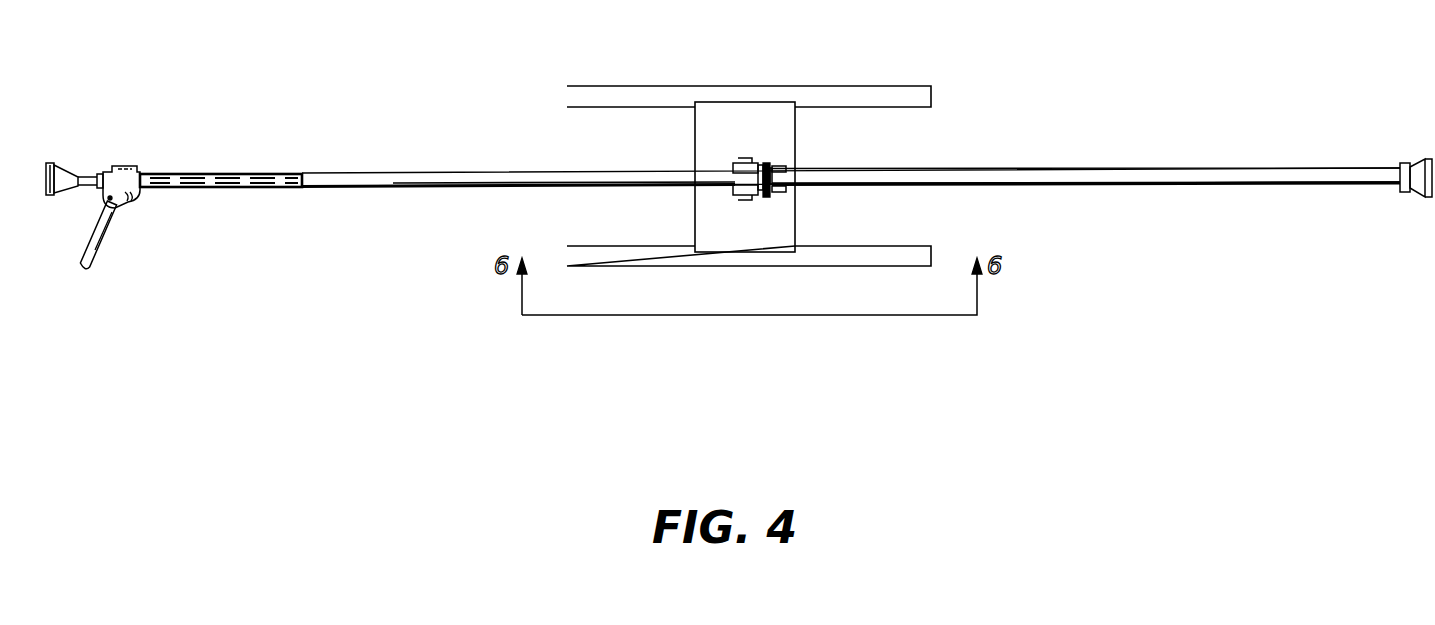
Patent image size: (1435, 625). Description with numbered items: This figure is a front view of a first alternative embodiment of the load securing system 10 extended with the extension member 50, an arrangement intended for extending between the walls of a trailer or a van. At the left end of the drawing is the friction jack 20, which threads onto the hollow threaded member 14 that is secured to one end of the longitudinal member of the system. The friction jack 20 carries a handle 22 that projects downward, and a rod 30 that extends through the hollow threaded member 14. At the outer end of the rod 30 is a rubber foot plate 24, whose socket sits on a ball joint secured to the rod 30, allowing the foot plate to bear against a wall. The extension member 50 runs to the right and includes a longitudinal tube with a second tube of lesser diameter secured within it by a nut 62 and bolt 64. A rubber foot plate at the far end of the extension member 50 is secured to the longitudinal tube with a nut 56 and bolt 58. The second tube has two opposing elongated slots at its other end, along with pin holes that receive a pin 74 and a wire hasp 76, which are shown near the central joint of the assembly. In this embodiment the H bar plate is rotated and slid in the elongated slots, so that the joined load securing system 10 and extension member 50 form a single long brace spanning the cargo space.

The load securing system 10 is at (264, 173).
The hollow threaded member 14 is at (188, 190).
The friction jack 20 is at (127, 166).
The handle 22 is at (102, 237).
The rubber foot plate 24 is at (53, 197).
The rod 30 is at (78, 173).
The extension member 50 is at (1040, 170).
The nut 56 is at (722, 197).
The bolt 58 is at (720, 168).
The nut 62 is at (785, 167).
The bolt 64 is at (786, 192).
The pin 74 is at (762, 166).
The wire hasp 76 is at (770, 170).